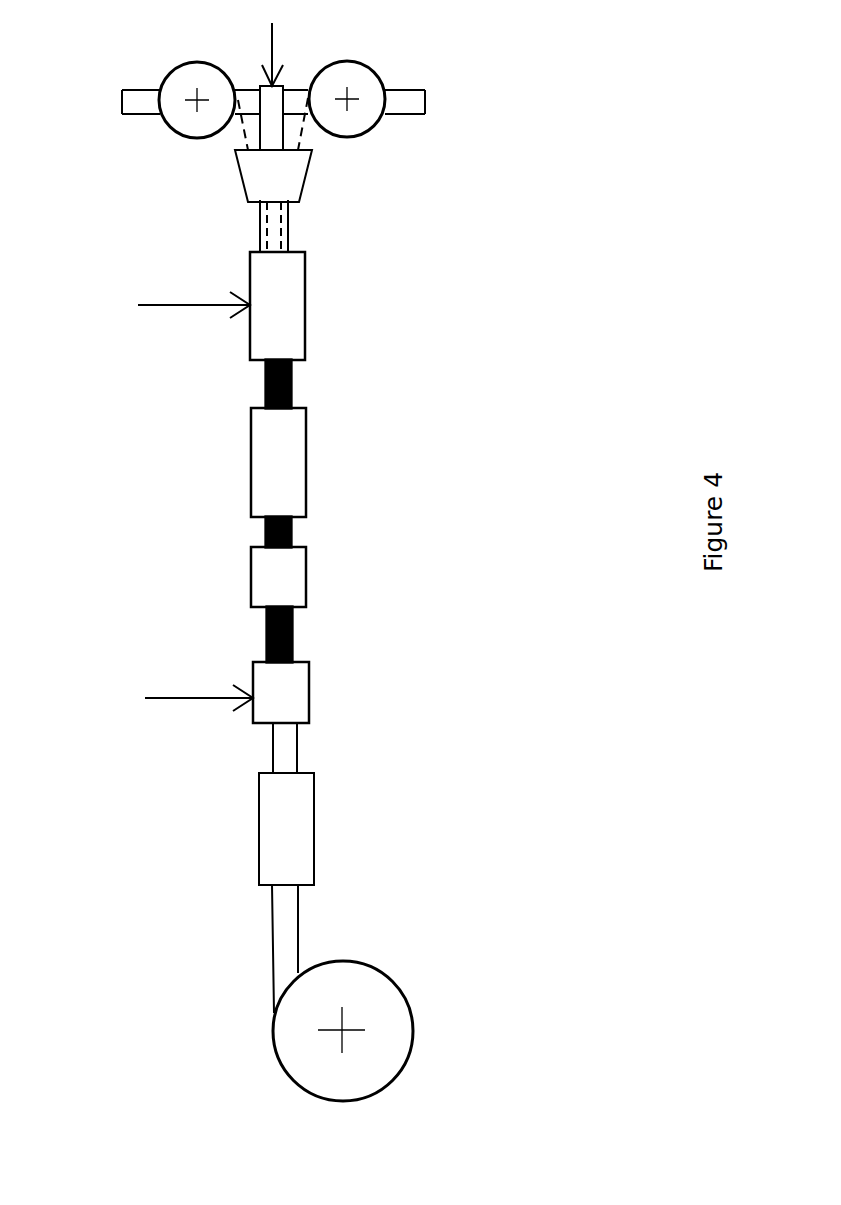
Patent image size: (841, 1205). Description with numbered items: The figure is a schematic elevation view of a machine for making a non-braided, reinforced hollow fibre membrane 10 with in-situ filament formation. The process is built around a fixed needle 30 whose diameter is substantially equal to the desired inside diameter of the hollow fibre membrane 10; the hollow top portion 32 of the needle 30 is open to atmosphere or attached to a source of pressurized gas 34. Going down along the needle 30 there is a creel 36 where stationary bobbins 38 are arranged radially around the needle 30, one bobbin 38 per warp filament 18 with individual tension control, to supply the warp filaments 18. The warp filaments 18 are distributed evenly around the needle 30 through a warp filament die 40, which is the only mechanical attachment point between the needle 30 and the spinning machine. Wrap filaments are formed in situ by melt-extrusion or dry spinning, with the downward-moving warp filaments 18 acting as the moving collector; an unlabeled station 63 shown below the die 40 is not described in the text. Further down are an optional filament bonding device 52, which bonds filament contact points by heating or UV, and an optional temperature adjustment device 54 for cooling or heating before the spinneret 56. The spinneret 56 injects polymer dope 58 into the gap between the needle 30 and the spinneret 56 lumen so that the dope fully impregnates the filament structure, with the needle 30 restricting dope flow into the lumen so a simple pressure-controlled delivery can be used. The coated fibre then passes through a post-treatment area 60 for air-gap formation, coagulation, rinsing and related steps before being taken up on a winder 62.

The hollow fibre membrane 10 is at (282, 745).
The warp filaments 18 is at (247, 133).
The needle 30 is at (347, 82).
The top portion of the needle 32 is at (273, 102).
The source of pressurized gas 34 is at (270, 42).
The creel 36 is at (135, 102).
The bobbins 38 is at (360, 120).
The warp filament die 40 is at (282, 172).
The filament bonding device 52 is at (287, 468).
The temperature adjustment device 54 is at (287, 590).
The spinneret 56 is at (290, 698).
The polymer dope 58 is at (177, 698).
The post-treatment area 60 is at (285, 825).
The winder 62 is at (383, 1018).
The bonding unit 63 is at (282, 303).